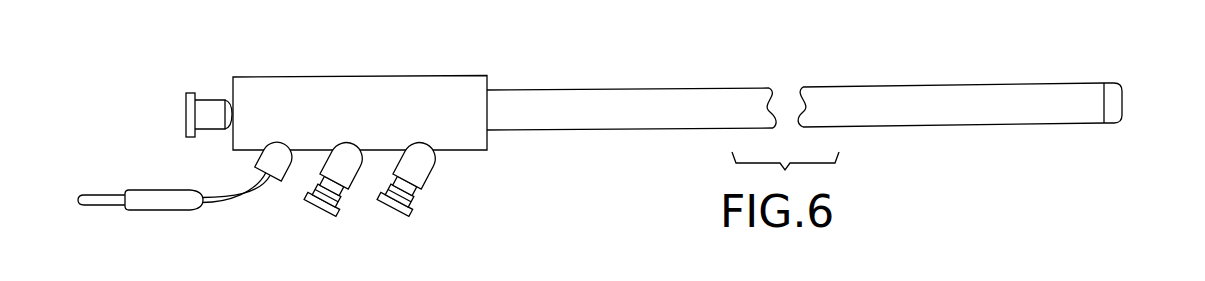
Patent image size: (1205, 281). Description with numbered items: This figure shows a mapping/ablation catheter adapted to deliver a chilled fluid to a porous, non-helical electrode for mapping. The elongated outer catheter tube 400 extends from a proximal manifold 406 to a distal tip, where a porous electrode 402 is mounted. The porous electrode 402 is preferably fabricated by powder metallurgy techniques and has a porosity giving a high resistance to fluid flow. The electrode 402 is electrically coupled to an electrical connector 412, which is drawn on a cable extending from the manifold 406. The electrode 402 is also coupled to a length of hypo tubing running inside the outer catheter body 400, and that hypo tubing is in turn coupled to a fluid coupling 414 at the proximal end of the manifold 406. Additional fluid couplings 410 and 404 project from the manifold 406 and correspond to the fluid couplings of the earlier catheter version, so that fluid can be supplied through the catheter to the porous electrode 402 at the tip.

The outer catheter tube 400 is at (642, 88).
The porous electrode 402 is at (1110, 83).
The connector 404 is at (388, 213).
The manifold 406 is at (445, 77).
The fluid coupling 410 is at (313, 218).
The electrical connector 412 is at (103, 207).
The fluid coupling 414 is at (186, 128).